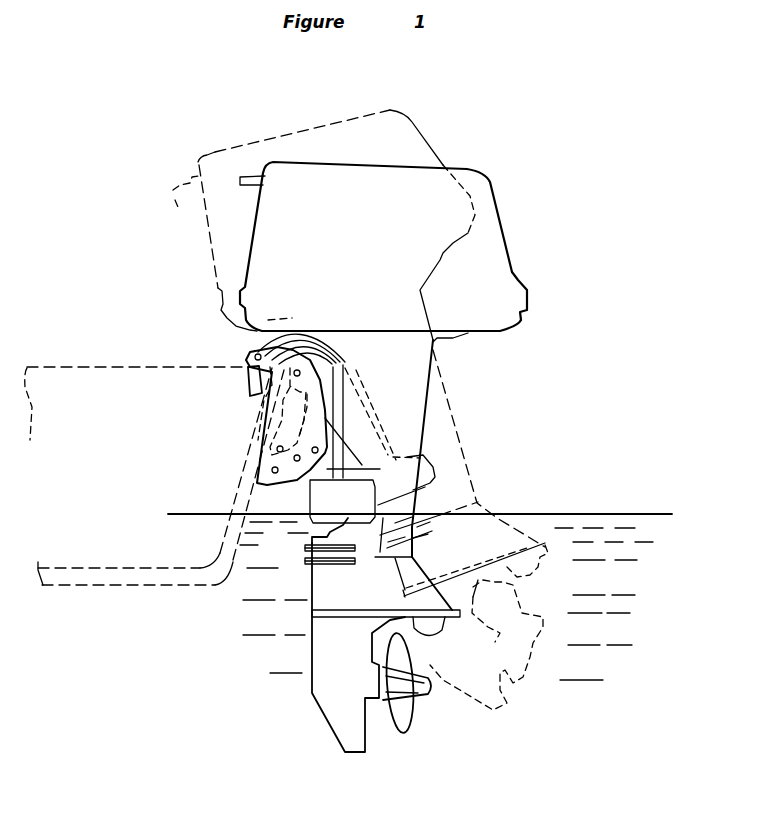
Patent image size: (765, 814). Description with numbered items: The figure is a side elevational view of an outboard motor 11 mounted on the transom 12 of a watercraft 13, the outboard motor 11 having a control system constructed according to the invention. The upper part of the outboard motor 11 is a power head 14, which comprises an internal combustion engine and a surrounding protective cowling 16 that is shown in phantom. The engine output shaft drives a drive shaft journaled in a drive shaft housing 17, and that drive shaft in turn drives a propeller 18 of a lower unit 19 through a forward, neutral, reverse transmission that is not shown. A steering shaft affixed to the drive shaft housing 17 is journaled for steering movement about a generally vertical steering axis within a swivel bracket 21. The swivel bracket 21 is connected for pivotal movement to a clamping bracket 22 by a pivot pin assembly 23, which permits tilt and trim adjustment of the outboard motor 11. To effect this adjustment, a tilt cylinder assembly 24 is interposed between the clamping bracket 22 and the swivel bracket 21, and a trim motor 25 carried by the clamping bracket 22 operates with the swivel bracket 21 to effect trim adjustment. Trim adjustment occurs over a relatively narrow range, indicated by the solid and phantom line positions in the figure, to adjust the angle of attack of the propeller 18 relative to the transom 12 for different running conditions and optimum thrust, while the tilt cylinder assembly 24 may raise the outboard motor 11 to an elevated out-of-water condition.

The outboard motor 11 is at (518, 203).
The transom 12 is at (233, 482).
The watercraft 13 is at (118, 367).
The power head 14 is at (518, 275).
The protective cowling 16 is at (465, 170).
The drive shaft housing 17 is at (413, 413).
The propeller 18 is at (403, 712).
The lower unit 19 is at (340, 702).
The swivel bracket 21 is at (380, 462).
The clamping bracket 22 is at (247, 385).
The pivot pin assembly 23 is at (247, 357).
The tilt cylinder assembly 24 is at (262, 436).
The trim motor 25 is at (309, 485).